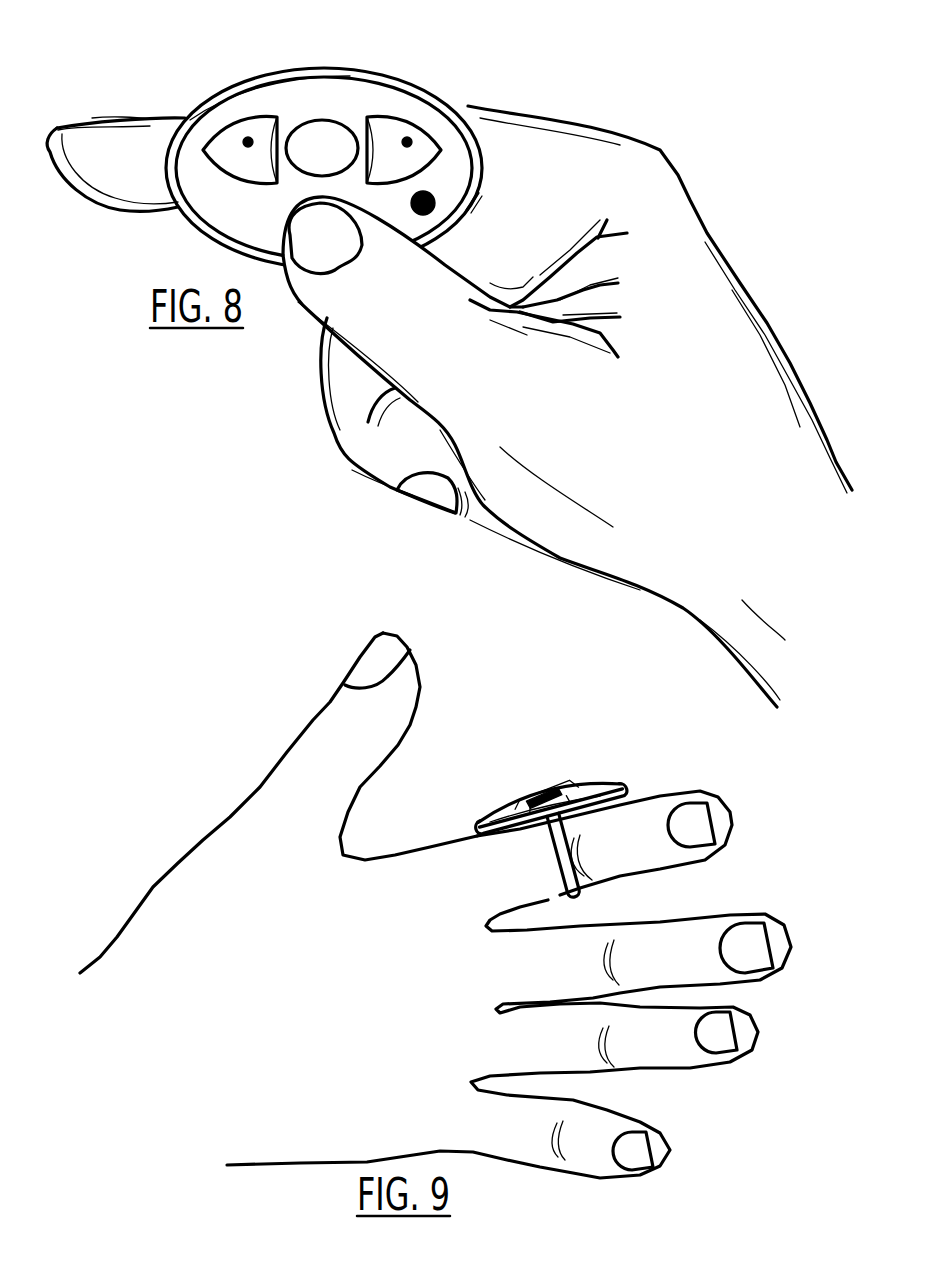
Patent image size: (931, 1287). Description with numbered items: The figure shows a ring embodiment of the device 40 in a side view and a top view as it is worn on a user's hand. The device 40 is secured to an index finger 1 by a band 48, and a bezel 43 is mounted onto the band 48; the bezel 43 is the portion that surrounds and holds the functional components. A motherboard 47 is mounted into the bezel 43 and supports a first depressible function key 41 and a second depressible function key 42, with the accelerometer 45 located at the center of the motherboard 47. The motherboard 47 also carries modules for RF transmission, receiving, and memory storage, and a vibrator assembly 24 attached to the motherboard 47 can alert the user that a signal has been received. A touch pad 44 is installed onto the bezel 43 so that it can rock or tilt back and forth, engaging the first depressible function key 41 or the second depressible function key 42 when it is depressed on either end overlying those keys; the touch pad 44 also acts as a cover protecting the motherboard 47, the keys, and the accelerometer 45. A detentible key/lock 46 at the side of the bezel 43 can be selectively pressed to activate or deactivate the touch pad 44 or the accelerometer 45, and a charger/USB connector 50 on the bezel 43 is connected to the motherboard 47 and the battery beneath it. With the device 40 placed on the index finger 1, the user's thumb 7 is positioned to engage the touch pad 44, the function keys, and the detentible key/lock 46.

In FIG. 8, the index finger 1 is at (100, 177).
In FIG. 8, the thumb 7 is at (403, 327).
In FIG. 9, the thumb 7 is at (333, 717).
In FIG. 8, the vibrator assembly 24 is at (430, 196).
In FIG. 8, the device 40 is at (361, 135).
In FIG. 9, the device 40 is at (547, 802).
In FIG. 8, the first depressible function key 41 is at (412, 142).
In FIG. 9, the first depressible function key 41 is at (510, 807).
In FIG. 8, the second depressible function key 42 is at (248, 138).
In FIG. 9, the second depressible function key 42 is at (544, 798).
In FIG. 8, the bezel 43 is at (275, 70).
In FIG. 9, the bezel 43 is at (548, 796).
In FIG. 9, the touch pad 44 is at (545, 793).
In FIG. 8, the accelerometer 45 is at (322, 132).
In FIG. 9, the accelerometer 45 is at (549, 804).
In FIG. 9, the detentible key/lock 46 is at (565, 806).
In FIG. 8, the motherboard 47 is at (400, 108).
In FIG. 9, the band 48 is at (564, 855).
In FIG. 8, the charger/USB connector 50 is at (475, 206).
In FIG. 9, the charger/USB connector 50 is at (477, 826).